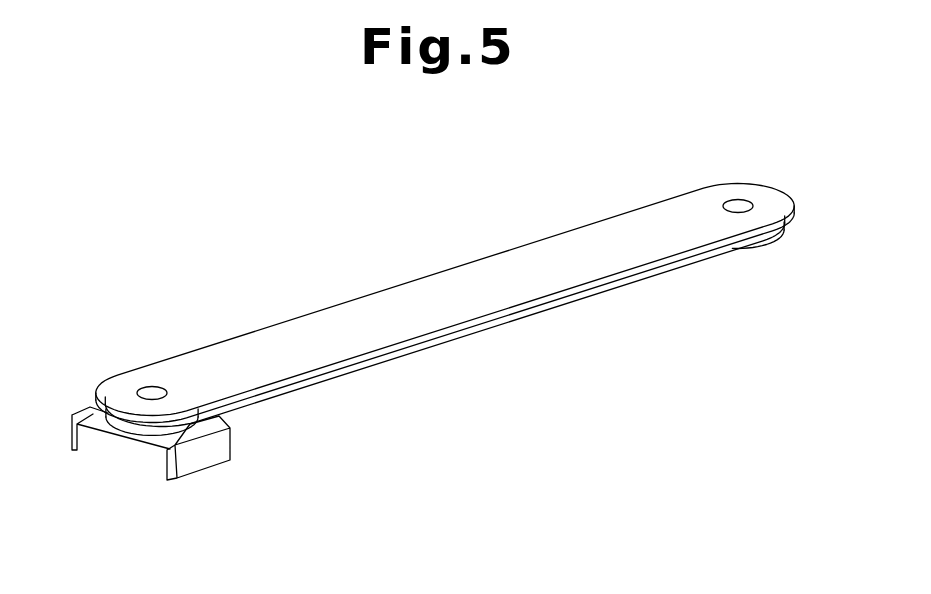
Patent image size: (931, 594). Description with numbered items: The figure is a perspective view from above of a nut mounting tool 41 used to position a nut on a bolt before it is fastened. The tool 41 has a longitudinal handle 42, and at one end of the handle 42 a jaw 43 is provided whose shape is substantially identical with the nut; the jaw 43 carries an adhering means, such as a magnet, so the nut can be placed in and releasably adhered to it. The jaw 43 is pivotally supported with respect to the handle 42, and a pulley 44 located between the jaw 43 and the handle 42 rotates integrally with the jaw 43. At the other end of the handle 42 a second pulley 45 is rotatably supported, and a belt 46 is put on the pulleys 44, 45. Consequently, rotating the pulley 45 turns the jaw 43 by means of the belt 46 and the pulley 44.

The tool 41 is at (313, 245).
The handle 42 is at (457, 290).
The jaw 43 is at (192, 463).
The pulley 44 is at (188, 428).
The pulley 45 is at (772, 243).
The belt 46 is at (525, 313).